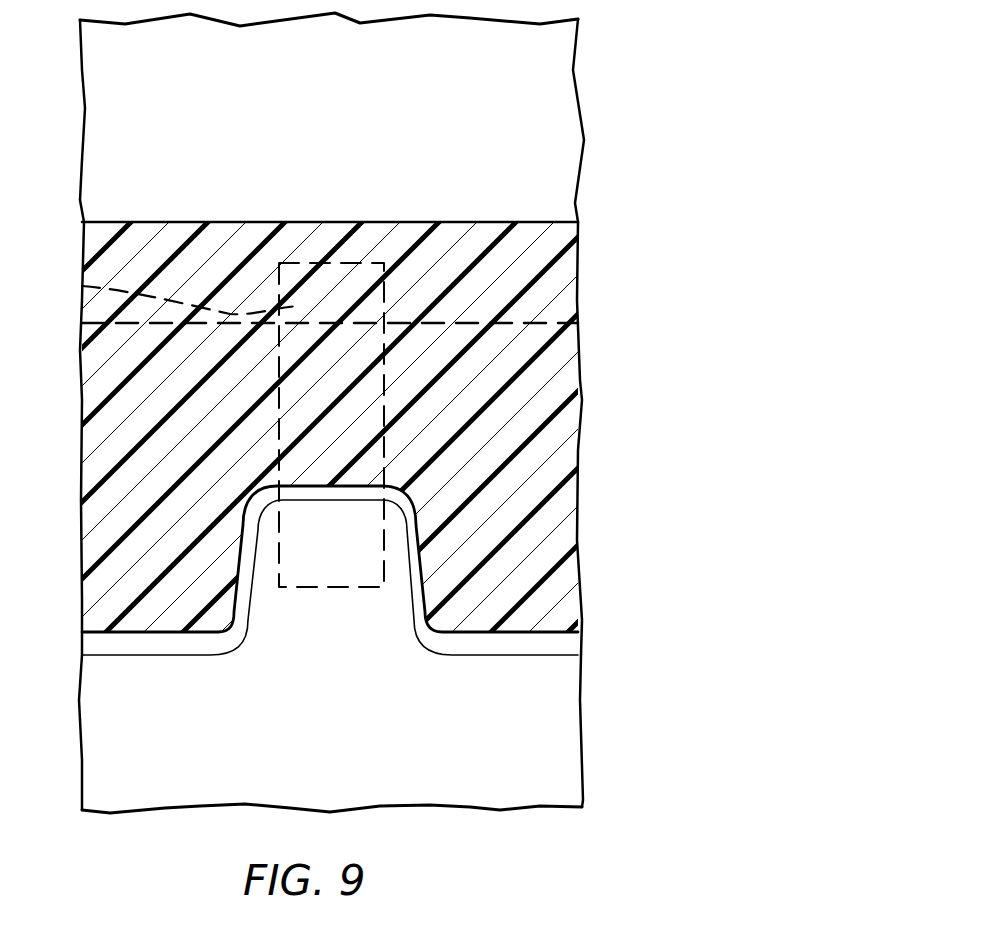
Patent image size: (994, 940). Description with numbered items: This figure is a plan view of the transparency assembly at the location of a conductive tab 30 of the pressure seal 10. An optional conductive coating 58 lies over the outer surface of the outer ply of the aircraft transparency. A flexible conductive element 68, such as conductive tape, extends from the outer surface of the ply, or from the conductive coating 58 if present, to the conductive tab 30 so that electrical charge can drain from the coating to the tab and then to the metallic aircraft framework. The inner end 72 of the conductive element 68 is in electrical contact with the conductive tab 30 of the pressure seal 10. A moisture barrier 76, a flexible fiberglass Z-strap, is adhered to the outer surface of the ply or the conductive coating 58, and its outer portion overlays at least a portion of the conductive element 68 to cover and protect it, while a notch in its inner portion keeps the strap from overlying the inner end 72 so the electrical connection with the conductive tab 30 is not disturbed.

The conductive coating 58 is at (557, 106).
The moisture barrier 76 is at (543, 379).
The flexible conductive element 68 is at (82, 286).
The conductive tab 30 is at (383, 614).
The inner end 72 is at (313, 587).
The pressure seal 10 is at (552, 710).